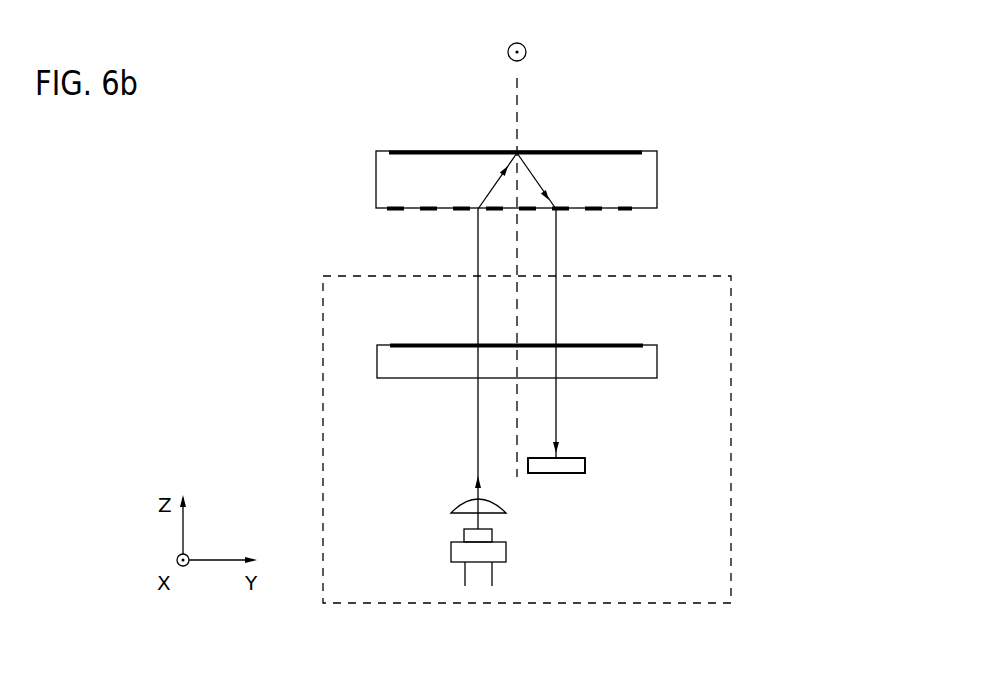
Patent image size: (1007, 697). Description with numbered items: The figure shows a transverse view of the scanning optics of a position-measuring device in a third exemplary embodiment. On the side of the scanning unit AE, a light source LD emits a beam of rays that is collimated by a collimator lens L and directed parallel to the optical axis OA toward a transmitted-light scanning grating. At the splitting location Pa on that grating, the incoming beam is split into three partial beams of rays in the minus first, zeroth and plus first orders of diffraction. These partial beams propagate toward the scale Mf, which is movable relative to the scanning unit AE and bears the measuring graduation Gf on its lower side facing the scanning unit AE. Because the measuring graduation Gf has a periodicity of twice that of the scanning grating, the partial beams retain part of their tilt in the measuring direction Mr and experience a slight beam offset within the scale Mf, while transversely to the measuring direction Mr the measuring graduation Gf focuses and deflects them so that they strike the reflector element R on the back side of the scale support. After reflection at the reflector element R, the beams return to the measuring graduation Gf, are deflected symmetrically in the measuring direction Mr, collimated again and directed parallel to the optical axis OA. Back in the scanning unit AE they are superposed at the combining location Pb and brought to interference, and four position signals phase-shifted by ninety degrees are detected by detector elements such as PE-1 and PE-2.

The measuring direction Mr is at (517, 36).
The optical axis OA is at (517, 98).
The reflector element R is at (632, 151).
The measuring graduation Gf is at (392, 207).
The scale Mf is at (648, 194).
The splitting location Pa is at (478, 340).
The combining location Pb is at (557, 340).
The detector element PE-2 is at (584, 466).
The detector element PE-1 is at (606, 482).
The collimator lens L is at (451, 510).
The light source LD is at (506, 556).
The scanning unit AE is at (731, 524).